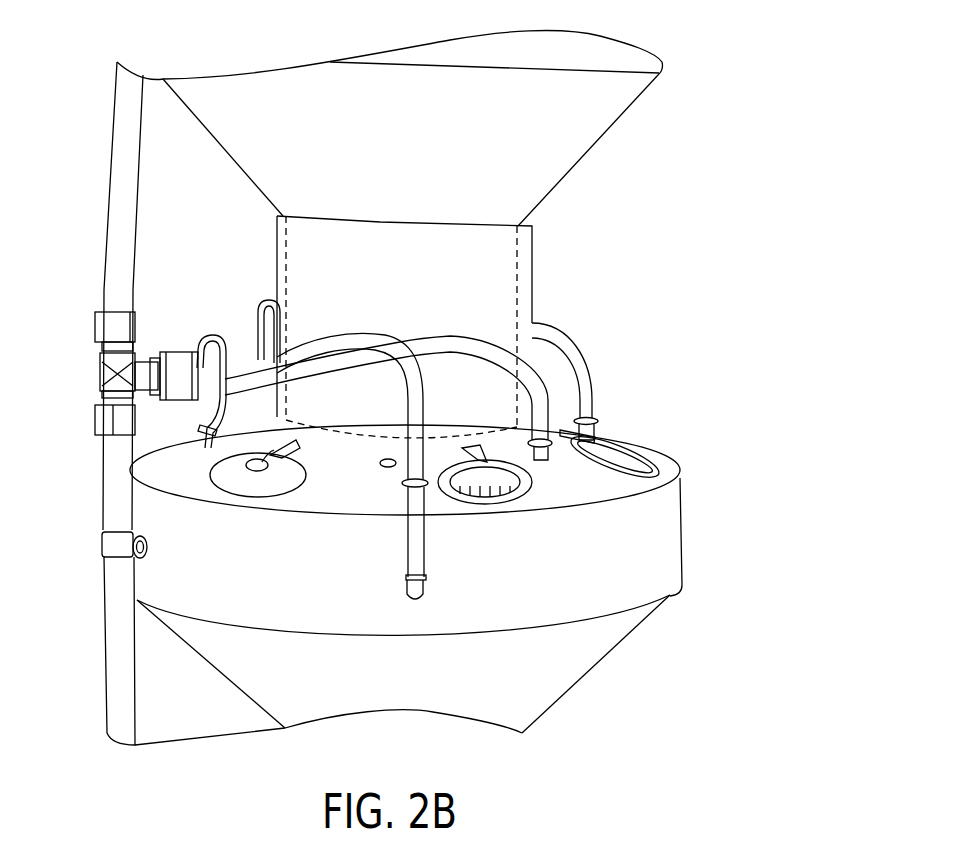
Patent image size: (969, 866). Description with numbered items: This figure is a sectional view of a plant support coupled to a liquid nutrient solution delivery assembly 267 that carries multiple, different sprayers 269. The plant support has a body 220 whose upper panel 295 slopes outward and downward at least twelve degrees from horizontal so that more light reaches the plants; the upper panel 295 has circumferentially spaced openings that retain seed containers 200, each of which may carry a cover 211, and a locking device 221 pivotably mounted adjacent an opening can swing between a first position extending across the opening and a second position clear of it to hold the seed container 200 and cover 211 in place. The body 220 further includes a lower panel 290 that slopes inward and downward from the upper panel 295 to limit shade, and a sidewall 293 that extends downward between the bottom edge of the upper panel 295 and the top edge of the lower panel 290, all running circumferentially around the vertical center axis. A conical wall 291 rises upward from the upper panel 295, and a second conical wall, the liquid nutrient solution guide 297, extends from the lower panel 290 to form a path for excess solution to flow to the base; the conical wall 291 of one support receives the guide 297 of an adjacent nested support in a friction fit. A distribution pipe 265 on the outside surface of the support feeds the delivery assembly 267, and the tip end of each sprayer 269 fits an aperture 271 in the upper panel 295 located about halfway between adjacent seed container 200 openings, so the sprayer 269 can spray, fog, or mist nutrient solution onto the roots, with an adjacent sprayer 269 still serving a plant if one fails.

The lower panel 290 is at (335, 75).
The liquid nutrient solution guide 297 is at (332, 227).
The conical wall 291 is at (528, 310).
The liquid nutrient solution delivery assembly 267 is at (178, 340).
The distribution pipe 265 is at (102, 663).
The sprayer 269 is at (405, 588).
The seed container 200 is at (515, 484).
The cover 211 is at (235, 478).
The aperture 271 is at (380, 466).
The locking device 221 is at (590, 434).
The body 220 is at (449, 575).
The upper panel 295 is at (608, 483).
The sidewall 293 is at (663, 553).